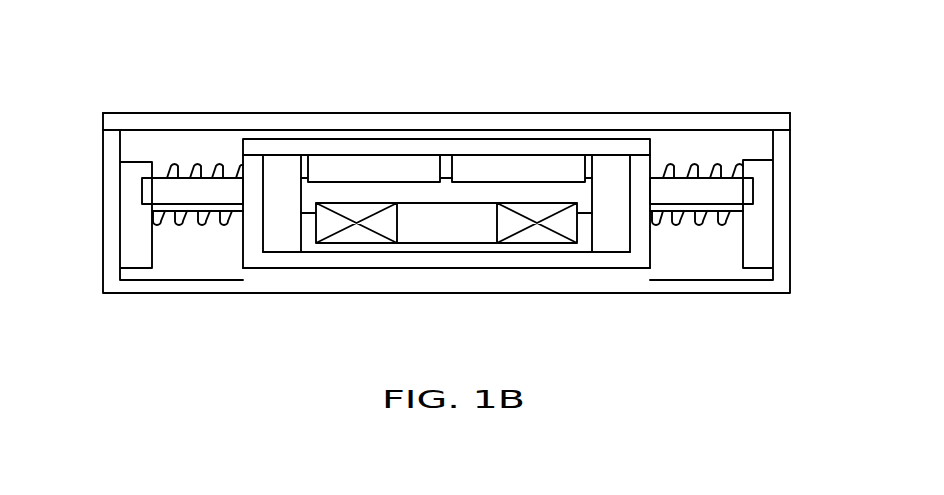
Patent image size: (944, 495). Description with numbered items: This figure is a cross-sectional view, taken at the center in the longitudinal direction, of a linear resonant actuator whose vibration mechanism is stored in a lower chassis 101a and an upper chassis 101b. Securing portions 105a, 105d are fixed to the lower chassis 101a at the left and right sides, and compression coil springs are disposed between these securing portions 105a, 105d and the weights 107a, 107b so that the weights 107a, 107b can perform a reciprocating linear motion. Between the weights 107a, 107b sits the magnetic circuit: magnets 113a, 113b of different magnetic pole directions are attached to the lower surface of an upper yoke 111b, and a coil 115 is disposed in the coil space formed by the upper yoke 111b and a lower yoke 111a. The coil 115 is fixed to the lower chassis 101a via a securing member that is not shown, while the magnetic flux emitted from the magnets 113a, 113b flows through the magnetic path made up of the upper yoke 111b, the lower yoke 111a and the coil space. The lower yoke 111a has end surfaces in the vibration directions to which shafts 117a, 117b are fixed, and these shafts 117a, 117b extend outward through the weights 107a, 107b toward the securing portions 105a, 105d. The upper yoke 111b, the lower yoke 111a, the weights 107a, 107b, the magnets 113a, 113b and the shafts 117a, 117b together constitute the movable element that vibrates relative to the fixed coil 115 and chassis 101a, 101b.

The lower chassis 101a is at (783, 253).
The upper chassis 101b is at (549, 130).
The securing portion 105a is at (127, 205).
The securing portion 105d is at (763, 197).
The weight 107a is at (277, 168).
The weight 107b is at (613, 168).
The lower yoke 111a is at (377, 260).
The upper yoke 111b is at (345, 147).
The magnet 113a is at (414, 163).
The magnet 113b is at (484, 163).
The coil 115 is at (470, 243).
The shaft 117a is at (194, 196).
The shaft 117b is at (692, 195).